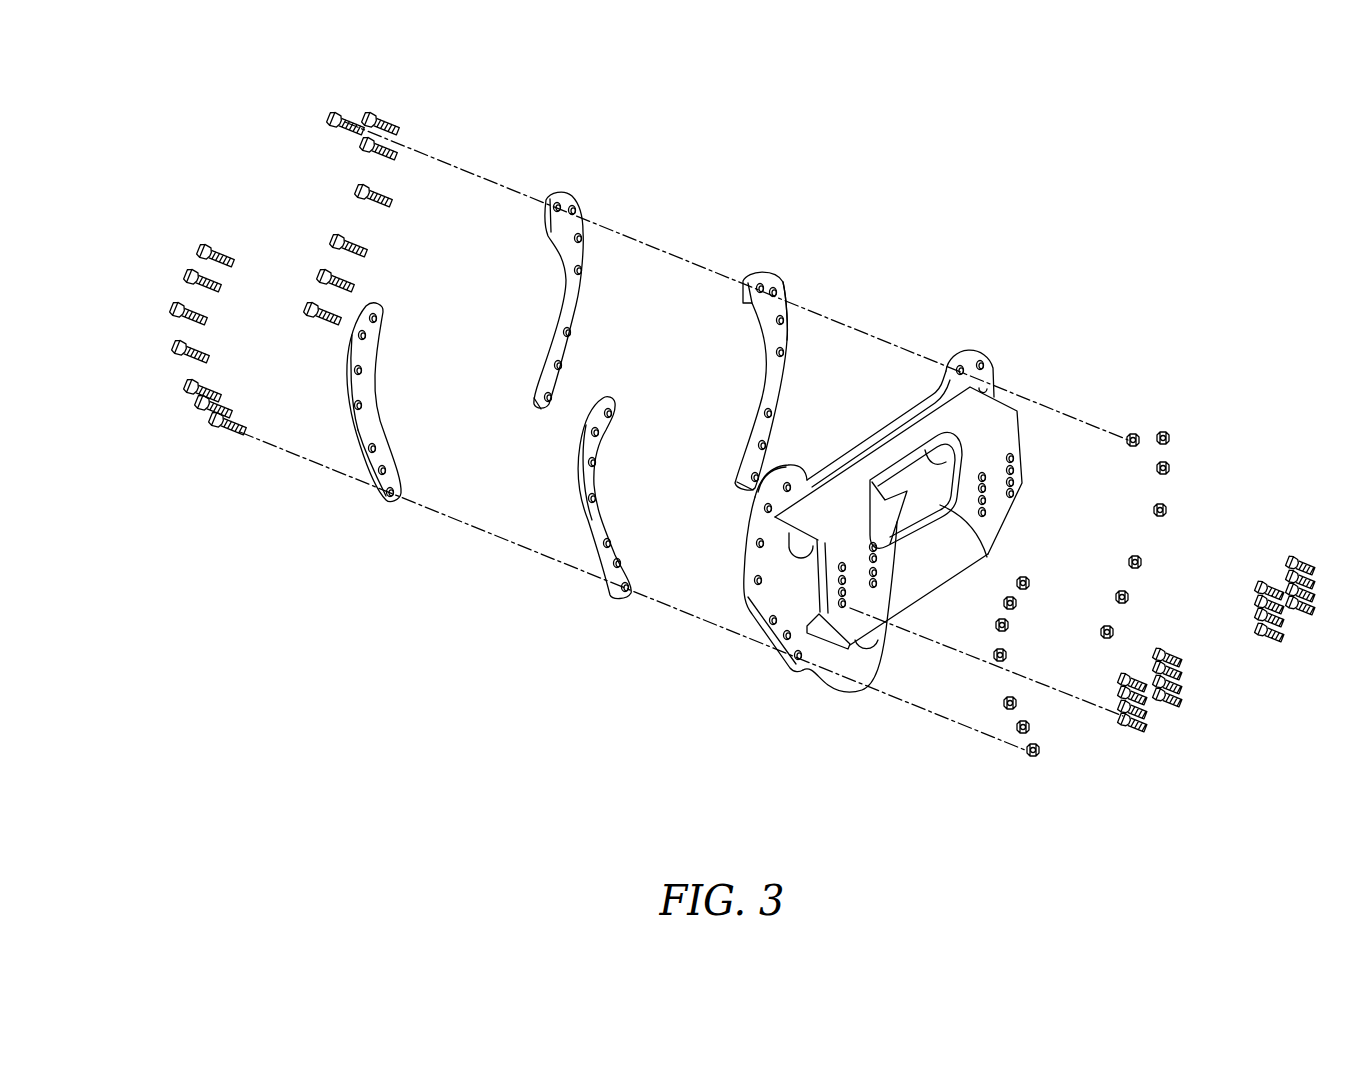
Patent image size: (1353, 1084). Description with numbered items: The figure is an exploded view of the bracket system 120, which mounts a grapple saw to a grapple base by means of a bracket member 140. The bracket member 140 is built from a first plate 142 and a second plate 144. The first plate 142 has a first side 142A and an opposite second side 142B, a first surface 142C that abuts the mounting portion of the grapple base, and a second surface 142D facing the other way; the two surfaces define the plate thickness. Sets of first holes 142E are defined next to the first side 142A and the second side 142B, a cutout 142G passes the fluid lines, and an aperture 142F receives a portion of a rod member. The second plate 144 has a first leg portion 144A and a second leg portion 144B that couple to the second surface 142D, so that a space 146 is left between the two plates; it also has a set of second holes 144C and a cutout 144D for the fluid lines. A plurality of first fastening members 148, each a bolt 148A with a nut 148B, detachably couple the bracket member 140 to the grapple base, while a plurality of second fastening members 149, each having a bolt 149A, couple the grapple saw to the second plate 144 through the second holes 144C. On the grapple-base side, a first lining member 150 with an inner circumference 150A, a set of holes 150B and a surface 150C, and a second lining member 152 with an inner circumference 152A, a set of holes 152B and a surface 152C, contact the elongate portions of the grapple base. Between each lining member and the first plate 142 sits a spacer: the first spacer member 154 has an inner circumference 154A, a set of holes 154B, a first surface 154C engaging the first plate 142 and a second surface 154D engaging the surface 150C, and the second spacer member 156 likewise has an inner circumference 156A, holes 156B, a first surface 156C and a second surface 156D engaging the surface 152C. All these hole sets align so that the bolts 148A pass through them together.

The bracket system 120 is at (945, 190).
The bracket member 140 is at (889, 512).
The first plate 142 is at (885, 512).
The first side 142A is at (733, 580).
The second side 142B is at (1008, 340).
The first surface 142C is at (910, 401).
The second surface 142D is at (868, 700).
The set of first holes 142E is at (990, 360).
The aperture 142F is at (882, 650).
The cutout 142G is at (880, 470).
The second plate 144 is at (928, 546).
The first leg portion 144A is at (1005, 393).
The second leg portion 144B is at (830, 640).
The set of second holes 144C is at (1015, 491).
The cutout 144D is at (958, 575).
The space 146 is at (805, 605).
The first fastening members 148 is at (643, 471).
The bolt 148A is at (178, 347).
The nut 148B is at (1031, 758).
The second fastening members 149 is at (1083, 636).
The bolt 149A is at (1133, 728).
The first lining member 150 is at (415, 445).
The inner circumference 150A is at (378, 364).
The set of holes 150B is at (362, 405).
The surface 150C is at (385, 453).
The second lining member 152 is at (568, 263).
The inner circumference 152A is at (560, 292).
The set of holes 152B is at (582, 272).
The surface 152C is at (565, 348).
The first spacer member 154 is at (572, 479).
The inner circumference 154A is at (600, 480).
The set of holes 154B is at (610, 413).
The first surface 154C is at (610, 557).
The second surface 154D is at (570, 480).
The second spacer member 156 is at (774, 348).
The inner circumference 156A is at (760, 357).
The set of holes 156B is at (788, 352).
The first surface 156C is at (787, 333).
The second surface 156D is at (748, 424).